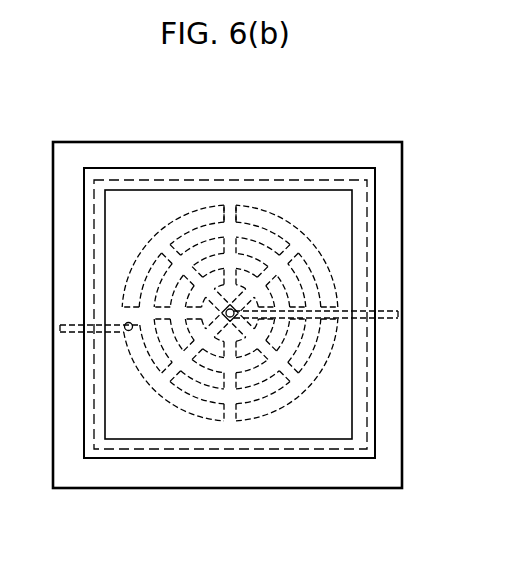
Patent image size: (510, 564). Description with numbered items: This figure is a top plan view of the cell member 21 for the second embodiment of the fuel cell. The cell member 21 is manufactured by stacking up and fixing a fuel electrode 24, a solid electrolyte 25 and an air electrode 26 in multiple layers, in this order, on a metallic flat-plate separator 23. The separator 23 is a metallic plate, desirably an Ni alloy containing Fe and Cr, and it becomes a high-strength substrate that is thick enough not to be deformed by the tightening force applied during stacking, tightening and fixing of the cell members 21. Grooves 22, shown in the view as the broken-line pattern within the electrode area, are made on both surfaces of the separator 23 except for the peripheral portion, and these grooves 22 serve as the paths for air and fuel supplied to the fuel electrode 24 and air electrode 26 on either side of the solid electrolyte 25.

The cell member 21 is at (273, 141).
The grooves 22 is at (273, 411).
The metallic flat-plate separator 23 is at (399, 204).
The fuel electrode 24 is at (316, 178).
The solid electrolyte 25 is at (358, 174).
The air electrode 26 is at (232, 200).